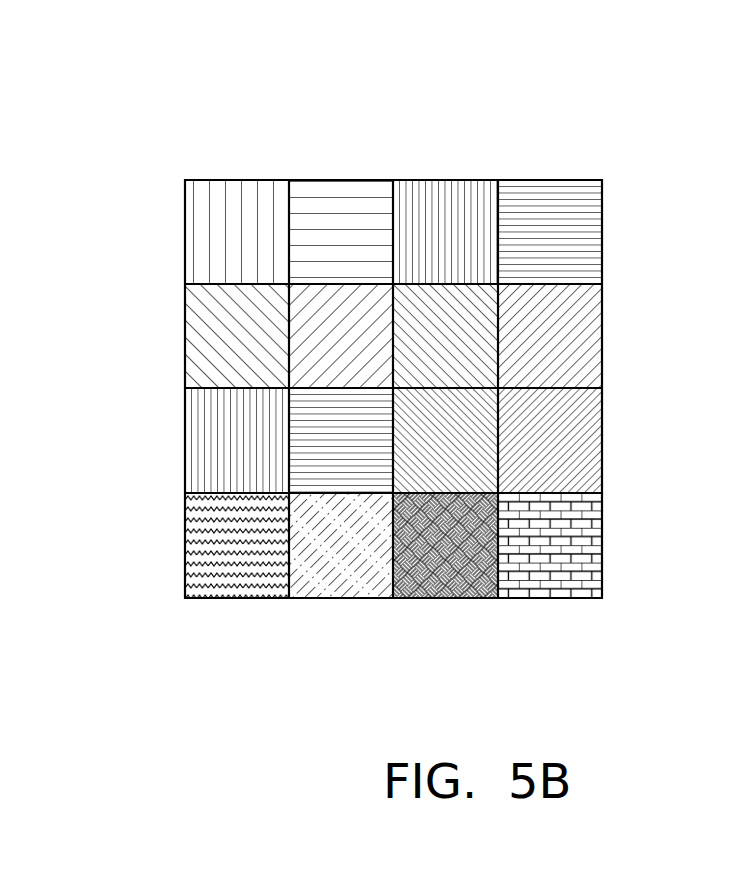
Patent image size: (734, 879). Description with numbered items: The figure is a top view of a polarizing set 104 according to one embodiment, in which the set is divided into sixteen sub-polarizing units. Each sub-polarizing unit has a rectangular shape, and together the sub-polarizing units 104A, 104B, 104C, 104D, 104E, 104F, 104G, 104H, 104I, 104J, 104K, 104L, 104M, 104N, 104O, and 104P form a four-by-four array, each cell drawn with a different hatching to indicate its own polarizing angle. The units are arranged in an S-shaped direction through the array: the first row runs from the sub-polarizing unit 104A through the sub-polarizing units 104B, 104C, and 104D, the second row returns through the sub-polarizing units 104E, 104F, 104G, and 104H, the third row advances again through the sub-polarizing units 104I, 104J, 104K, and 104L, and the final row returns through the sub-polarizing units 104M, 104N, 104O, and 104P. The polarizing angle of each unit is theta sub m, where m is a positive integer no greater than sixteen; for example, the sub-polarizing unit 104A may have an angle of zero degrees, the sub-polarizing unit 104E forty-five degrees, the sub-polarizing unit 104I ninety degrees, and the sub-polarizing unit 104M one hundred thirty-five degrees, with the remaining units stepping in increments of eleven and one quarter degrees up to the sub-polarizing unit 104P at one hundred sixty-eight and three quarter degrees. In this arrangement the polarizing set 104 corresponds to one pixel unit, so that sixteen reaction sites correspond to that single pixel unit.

The polarizing set 104 is at (191, 75).
The sub-polarizing unit 104A is at (238, 208).
The sub-polarizing unit 104B is at (342, 207).
The sub-polarizing unit 104C is at (447, 208).
The sub-polarizing unit 104D is at (553, 209).
The sub-polarizing unit 104E is at (580, 315).
The sub-polarizing unit 104F is at (463, 365).
The sub-polarizing unit 104G is at (313, 317).
The sub-polarizing unit 104H is at (208, 362).
The sub-polarizing unit 104I is at (205, 420).
The sub-polarizing unit 104J is at (330, 470).
The sub-polarizing unit 104K is at (458, 422).
The sub-polarizing unit 104L is at (578, 468).
The sub-polarizing unit 104M is at (553, 569).
The sub-polarizing unit 104N is at (450, 568).
The sub-polarizing unit 104O is at (343, 567).
The sub-polarizing unit 104P is at (240, 568).